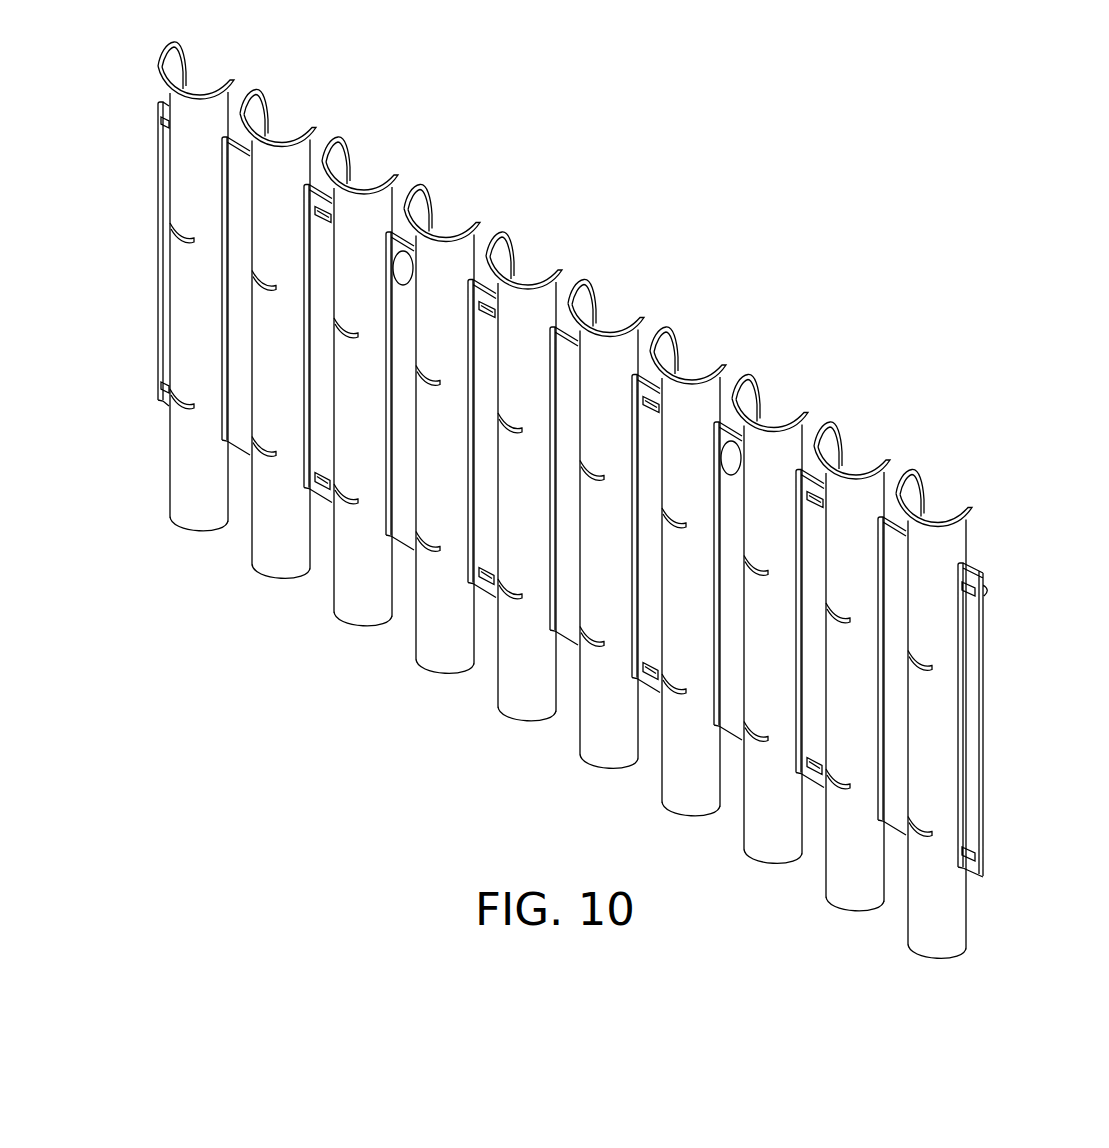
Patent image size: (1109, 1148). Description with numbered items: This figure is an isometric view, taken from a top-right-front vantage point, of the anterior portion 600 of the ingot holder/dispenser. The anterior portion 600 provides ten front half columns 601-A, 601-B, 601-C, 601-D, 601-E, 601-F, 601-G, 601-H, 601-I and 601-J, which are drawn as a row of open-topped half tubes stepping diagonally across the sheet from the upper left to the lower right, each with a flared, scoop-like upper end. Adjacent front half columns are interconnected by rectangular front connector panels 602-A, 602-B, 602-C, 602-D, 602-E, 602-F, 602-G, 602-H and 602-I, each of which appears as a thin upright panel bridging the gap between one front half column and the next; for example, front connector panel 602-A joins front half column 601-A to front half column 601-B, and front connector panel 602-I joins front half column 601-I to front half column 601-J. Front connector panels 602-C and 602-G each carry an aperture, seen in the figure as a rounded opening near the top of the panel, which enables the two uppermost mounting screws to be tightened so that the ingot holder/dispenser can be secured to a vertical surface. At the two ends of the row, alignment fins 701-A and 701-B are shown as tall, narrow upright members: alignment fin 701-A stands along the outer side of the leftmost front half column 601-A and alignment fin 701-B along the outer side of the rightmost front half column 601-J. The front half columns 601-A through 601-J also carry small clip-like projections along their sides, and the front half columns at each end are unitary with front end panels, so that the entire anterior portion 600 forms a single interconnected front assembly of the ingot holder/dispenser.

The anterior portion 600 is at (122, 80).
The front half column 601-A is at (188, 497).
The front half column 601-B is at (188, 497).
The front half column 601-C is at (318, 381).
The front half column 601-D is at (400, 428).
The front half column 601-E is at (482, 476).
The front half column 601-F is at (564, 523).
The front half column 601-G is at (646, 571).
The front half column 601-H is at (728, 618).
The front half column 601-I is at (810, 666).
The front half column 601-J is at (892, 713).
The front connector panel 602-A is at (234, 153).
The front connector panel 602-B is at (362, 306).
The front connector panel 602-C is at (444, 353).
The front connector panel 602-D is at (527, 401).
The front connector panel 602-E is at (608, 448).
The front connector panel 602-F is at (689, 496).
The front connector panel 602-G is at (774, 543).
The front connector panel 602-H is at (855, 591).
The front connector panel 602-I is at (932, 638).
The alignment fin 701-A is at (165, 248).
The alignment fin 701-B is at (968, 718).